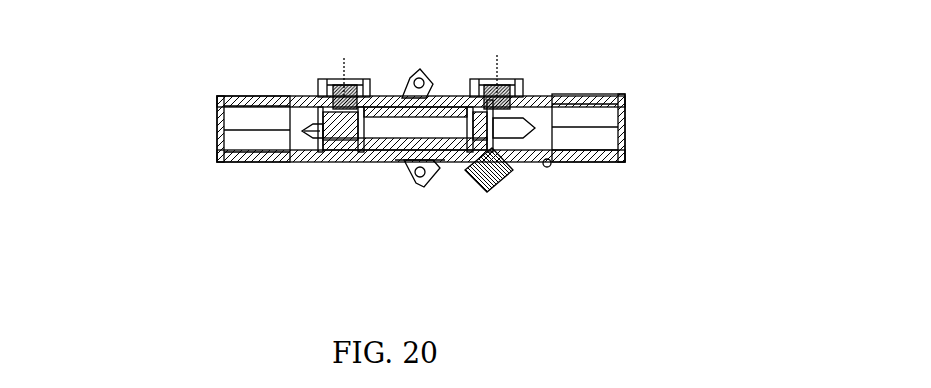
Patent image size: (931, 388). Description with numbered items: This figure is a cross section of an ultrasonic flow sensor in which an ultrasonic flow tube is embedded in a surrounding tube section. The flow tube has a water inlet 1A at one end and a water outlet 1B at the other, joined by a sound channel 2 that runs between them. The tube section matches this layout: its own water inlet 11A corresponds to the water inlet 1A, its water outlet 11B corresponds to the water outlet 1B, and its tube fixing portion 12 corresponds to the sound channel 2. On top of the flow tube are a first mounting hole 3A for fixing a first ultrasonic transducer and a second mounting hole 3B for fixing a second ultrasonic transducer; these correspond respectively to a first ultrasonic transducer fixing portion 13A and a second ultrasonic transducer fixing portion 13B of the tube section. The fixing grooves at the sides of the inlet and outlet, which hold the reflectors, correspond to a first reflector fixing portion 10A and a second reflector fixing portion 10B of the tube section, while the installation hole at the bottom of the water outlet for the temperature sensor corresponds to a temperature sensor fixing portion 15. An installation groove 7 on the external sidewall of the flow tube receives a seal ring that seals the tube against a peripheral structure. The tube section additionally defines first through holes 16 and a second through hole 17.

The sound channel 2 is at (387, 132).
The installation groove 7 is at (407, 160).
The water inlet 1A is at (310, 117).
The water outlet 1B is at (530, 105).
The first mounting hole 3A is at (400, 52).
The second mounting hole 3B is at (530, 48).
The first reflector fixing portion 10A is at (300, 133).
The second reflector fixing portion 10B is at (537, 132).
The water inlet 11A is at (217, 132).
The water outlet 11B is at (625, 125).
The tube fixing portion 12 is at (308, 128).
The first ultrasonic transducer fixing portion 13A is at (347, 110).
The second ultrasonic transducer fixing portion 13B is at (587, 55).
The temperature sensor fixing portion 15 is at (472, 182).
The first through holes 16 is at (418, 72).
The second through hole 17 is at (507, 130).